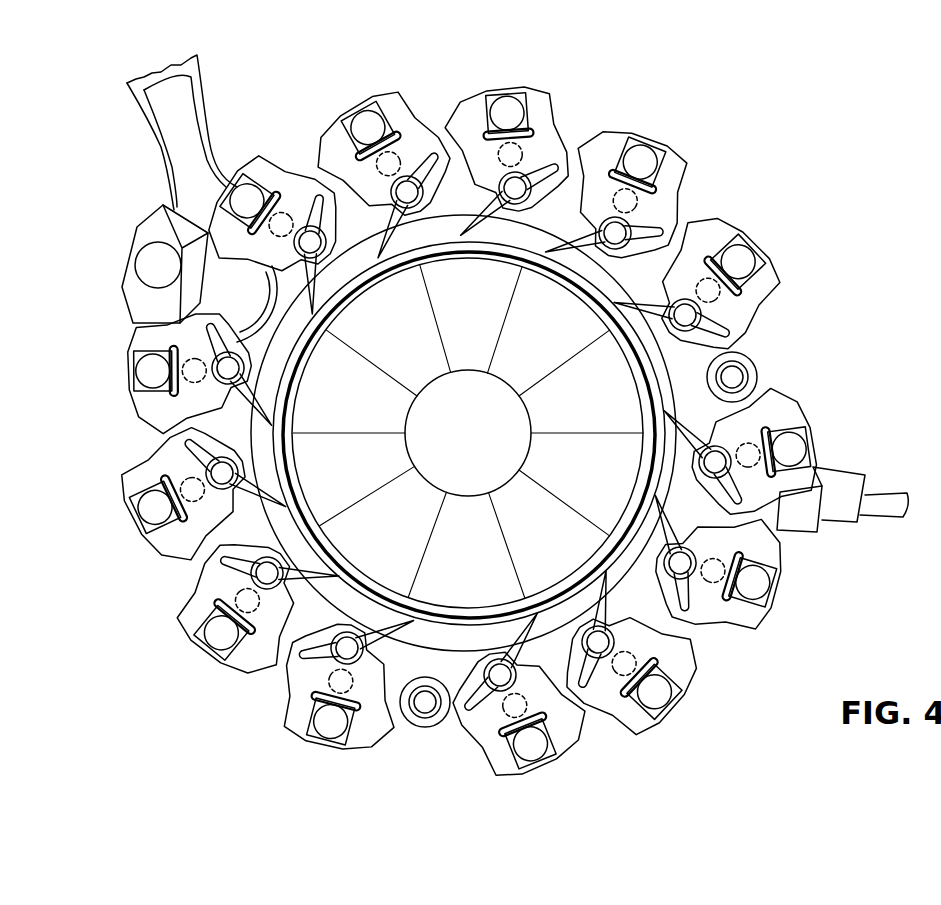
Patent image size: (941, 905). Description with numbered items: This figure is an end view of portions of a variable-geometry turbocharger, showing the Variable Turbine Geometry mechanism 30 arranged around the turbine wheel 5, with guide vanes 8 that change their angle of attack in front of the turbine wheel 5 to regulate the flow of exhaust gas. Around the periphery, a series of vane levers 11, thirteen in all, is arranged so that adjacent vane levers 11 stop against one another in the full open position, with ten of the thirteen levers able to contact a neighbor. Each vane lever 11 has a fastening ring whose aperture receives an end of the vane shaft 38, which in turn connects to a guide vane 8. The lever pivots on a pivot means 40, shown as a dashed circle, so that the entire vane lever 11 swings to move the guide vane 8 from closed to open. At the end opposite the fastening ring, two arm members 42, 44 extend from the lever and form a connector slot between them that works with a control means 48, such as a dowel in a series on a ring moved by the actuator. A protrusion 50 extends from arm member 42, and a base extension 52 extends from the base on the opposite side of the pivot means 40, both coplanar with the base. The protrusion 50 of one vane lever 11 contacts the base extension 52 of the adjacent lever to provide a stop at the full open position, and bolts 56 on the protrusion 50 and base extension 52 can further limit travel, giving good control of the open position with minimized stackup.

The turbine wheel 5 is at (560, 310).
The guide vanes 8 is at (466, 232).
The vane lever 11 is at (678, 178).
The Variable Turbine Geometry mechanism 30 is at (314, 132).
The vane shaft 38 is at (518, 180).
The pivot means 40 is at (726, 284).
The arm member 42 is at (723, 233).
The arm member 44 is at (767, 287).
The control means 48 is at (247, 193).
The protrusion 50 is at (395, 728).
The base extension 52 is at (472, 723).
The bolts 56 is at (738, 375).